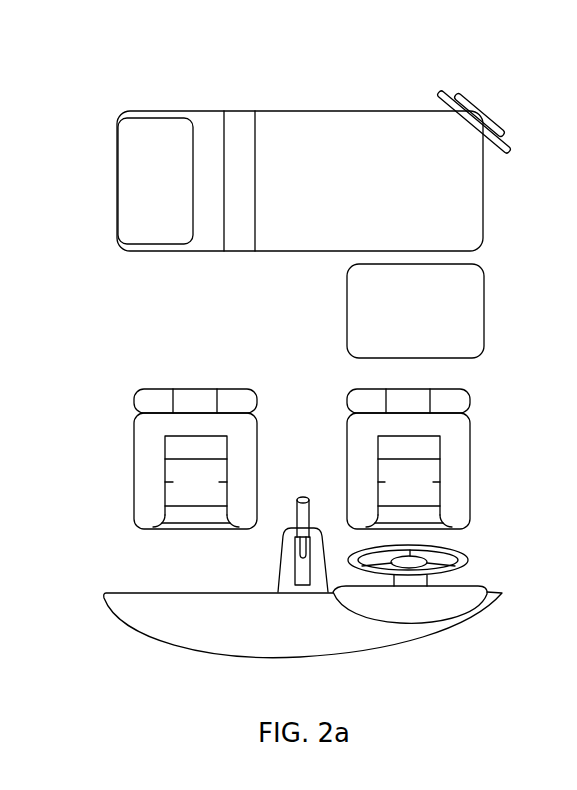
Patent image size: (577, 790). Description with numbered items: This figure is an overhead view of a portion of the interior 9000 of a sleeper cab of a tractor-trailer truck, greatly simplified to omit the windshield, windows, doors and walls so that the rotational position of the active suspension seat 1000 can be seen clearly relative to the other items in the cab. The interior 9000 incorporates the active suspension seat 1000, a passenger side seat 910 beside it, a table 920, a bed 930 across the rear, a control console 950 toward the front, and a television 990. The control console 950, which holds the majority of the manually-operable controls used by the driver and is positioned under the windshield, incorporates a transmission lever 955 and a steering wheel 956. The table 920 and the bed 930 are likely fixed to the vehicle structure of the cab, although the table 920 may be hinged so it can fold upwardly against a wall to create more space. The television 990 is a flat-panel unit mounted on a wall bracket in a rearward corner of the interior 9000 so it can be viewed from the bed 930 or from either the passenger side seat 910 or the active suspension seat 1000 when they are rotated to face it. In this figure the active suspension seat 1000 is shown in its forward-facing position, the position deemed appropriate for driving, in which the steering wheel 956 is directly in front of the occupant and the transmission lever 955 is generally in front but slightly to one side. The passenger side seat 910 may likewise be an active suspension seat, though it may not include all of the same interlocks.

The interior 9000 is at (122, 29).
The bed 930 is at (329, 191).
The television 990 is at (490, 121).
The table 920 is at (398, 323).
The passenger side seat 910 is at (179, 493).
The active suspension seat 1000 is at (386, 493).
The control console 950 is at (280, 555).
The transmission lever 955 is at (301, 499).
The steering wheel 956 is at (472, 560).